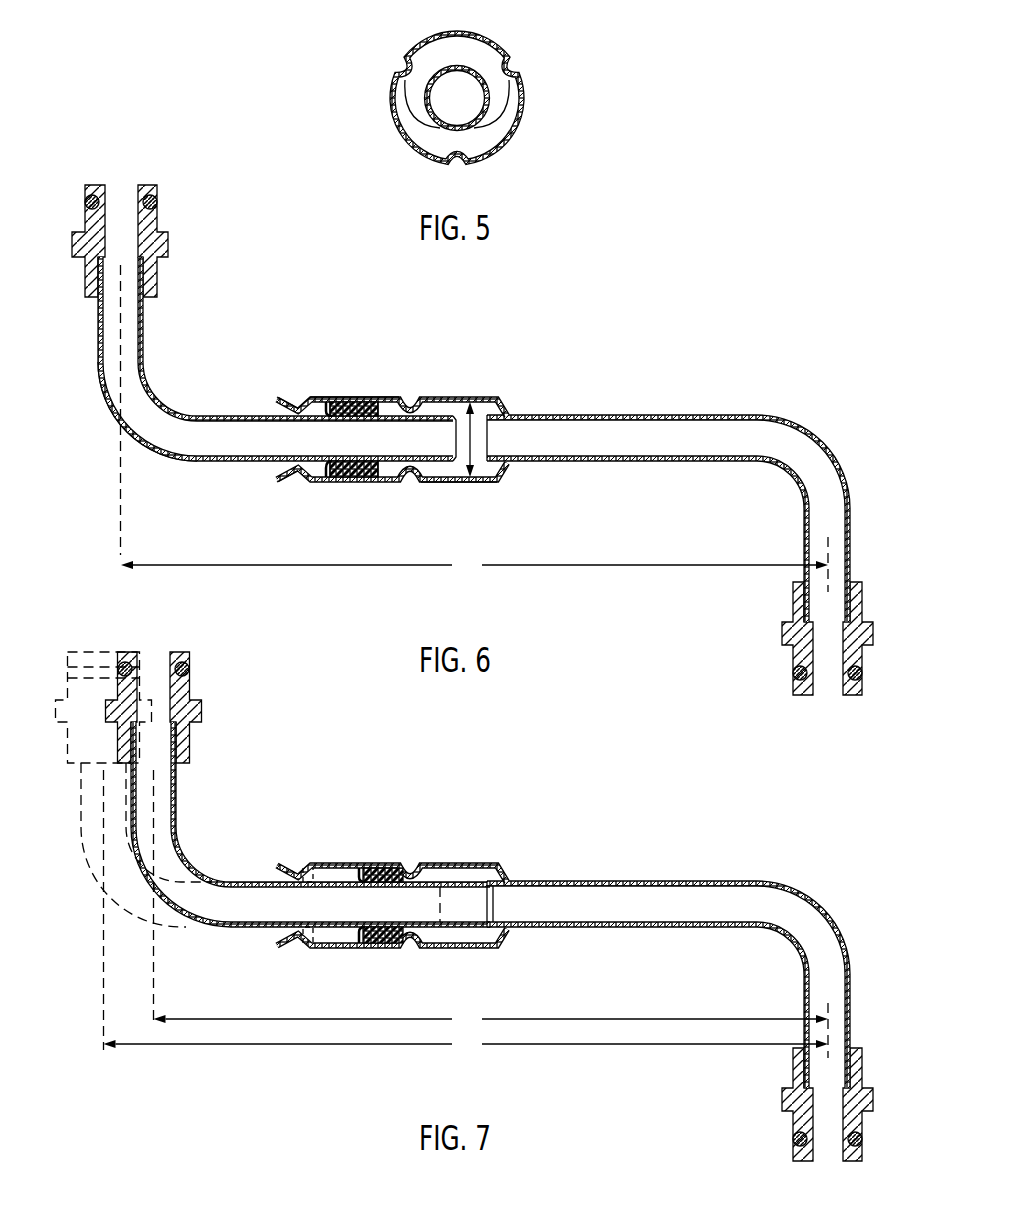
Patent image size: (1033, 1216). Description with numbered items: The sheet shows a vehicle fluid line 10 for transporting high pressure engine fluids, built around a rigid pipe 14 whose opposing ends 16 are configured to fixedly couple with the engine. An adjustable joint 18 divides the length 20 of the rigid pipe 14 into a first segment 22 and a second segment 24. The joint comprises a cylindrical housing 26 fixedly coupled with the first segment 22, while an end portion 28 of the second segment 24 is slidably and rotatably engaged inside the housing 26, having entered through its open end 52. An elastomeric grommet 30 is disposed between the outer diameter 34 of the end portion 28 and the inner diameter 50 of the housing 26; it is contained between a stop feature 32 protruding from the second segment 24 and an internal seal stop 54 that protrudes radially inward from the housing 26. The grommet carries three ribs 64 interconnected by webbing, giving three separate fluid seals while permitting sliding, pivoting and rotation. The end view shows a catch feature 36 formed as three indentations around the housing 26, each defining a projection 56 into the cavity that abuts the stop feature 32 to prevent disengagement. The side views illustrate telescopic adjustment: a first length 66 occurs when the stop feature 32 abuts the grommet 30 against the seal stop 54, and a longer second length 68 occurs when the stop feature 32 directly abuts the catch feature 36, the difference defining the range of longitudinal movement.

In FIG. 6, the vehicle fluid line 10 is at (465, 440).
In FIG. 7, the vehicle fluid line 10 is at (456, 906).
In FIG. 6, the rigid pipe 14 is at (103, 396).
In FIG. 6, the opposing ends 16 is at (185, 233).
In FIG. 7, the opposing ends 16 is at (220, 700).
In FIG. 5, the adjustable joint 18 is at (421, 99).
In FIG. 6, the adjustable joint 18 is at (384, 423).
In FIG. 7, the adjustable joint 18 is at (390, 891).
In FIG. 6, the length 20 is at (474, 566).
In FIG. 6, the first segment 22 is at (640, 414).
In FIG. 7, the first segment 22 is at (640, 880).
In FIG. 5, the second segment 24 is at (440, 70).
In FIG. 6, the second segment 24 is at (256, 406).
In FIG. 7, the second segment 24 is at (82, 832).
In FIG. 5, the housing 26 is at (459, 100).
In FIG. 6, the housing 26 is at (372, 424).
In FIG. 7, the housing 26 is at (390, 863).
In FIG. 6, the end portion 28 is at (433, 482).
In FIG. 6, the elastomeric grommet 30 is at (347, 438).
In FIG. 7, the elastomeric grommet 30 is at (372, 868).
In FIG. 6, the stop feature 32 is at (320, 466).
In FIG. 7, the stop feature 32 is at (297, 942).
In FIG. 6, the outer diameter 34 is at (292, 466).
In FIG. 5, the catch feature 36 is at (410, 70).
In FIG. 6, the catch feature 36 is at (300, 397).
In FIG. 7, the catch feature 36 is at (300, 863).
In FIG. 6, the inner diameter 50 is at (475, 438).
In FIG. 6, the open end 52 is at (270, 399).
In FIG. 6, the seal stop 54 is at (411, 398).
In FIG. 7, the seal stop 54 is at (412, 864).
In FIG. 5, the projection 56 is at (432, 108).
In FIG. 6, the ribs 64 is at (367, 478).
In FIG. 7, the first length 66 is at (491, 1020).
In FIG. 7, the second length 68 is at (466, 1045).